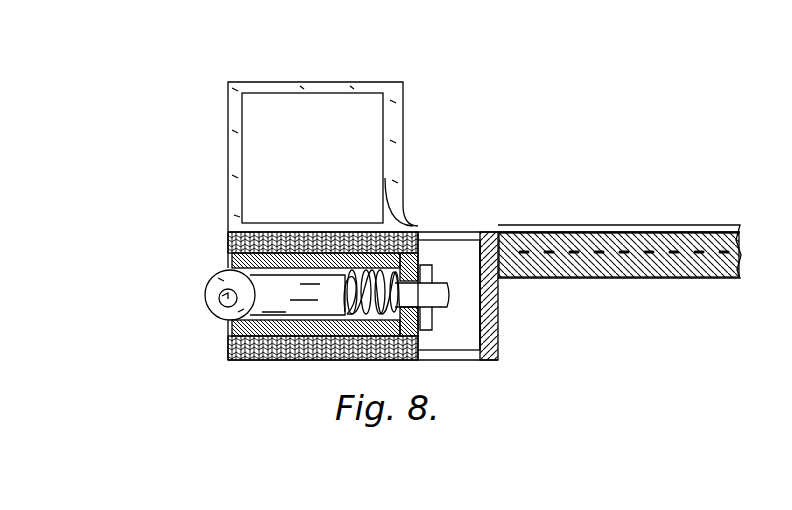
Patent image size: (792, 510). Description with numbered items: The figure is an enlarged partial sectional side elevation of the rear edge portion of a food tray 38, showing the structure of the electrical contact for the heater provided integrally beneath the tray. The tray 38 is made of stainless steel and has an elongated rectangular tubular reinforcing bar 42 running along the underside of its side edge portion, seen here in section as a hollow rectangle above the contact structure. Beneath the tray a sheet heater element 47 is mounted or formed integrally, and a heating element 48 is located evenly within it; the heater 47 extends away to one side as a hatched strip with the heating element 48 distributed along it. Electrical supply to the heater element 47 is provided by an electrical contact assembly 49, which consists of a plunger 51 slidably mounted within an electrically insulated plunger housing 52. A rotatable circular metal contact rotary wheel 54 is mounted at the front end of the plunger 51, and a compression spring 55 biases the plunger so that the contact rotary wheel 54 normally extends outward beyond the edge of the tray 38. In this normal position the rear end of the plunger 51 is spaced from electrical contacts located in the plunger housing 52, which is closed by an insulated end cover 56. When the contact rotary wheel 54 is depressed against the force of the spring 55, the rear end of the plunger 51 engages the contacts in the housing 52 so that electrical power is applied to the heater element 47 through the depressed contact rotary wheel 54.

The food tray 38 is at (408, 97).
The tubular reinforcing bar 42 is at (318, 92).
The sheet heater element 47 is at (650, 276).
The heating element 48 is at (589, 255).
The electrical contact assembly 49 is at (222, 261).
The plunger 51 is at (262, 358).
The plunger housing 52 is at (356, 359).
The contact rotary wheel 54 is at (214, 315).
The compression spring 55 is at (414, 229).
The insulated end cover 56 is at (497, 312).